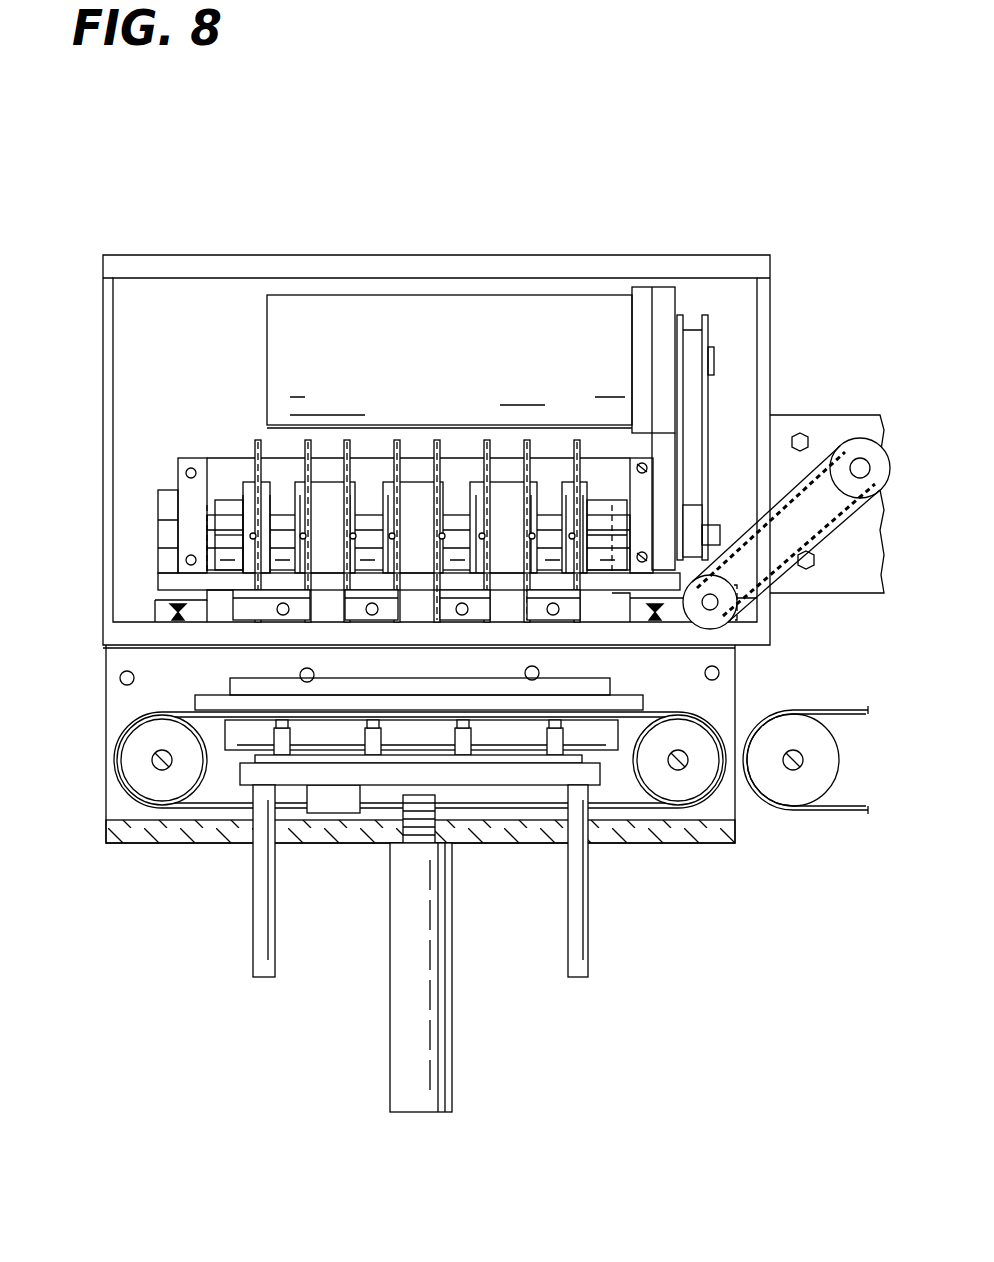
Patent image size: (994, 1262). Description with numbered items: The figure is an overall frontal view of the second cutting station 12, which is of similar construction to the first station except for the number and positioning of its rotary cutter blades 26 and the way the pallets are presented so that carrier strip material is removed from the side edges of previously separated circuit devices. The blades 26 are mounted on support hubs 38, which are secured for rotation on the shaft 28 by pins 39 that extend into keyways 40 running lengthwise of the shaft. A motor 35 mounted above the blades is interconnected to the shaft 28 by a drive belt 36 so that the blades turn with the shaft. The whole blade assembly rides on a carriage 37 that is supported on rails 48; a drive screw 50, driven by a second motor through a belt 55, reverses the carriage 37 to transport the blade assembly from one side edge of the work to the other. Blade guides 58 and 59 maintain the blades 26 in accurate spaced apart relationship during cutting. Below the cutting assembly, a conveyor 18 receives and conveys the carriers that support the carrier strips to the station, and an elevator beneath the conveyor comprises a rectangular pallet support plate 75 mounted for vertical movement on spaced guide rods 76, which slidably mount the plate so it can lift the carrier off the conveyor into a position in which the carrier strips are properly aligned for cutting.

The second cutting station 12 is at (97, 432).
The conveyor 18 is at (208, 812).
The rotary cutter blades 26 is at (400, 455).
The shaft 28 is at (268, 460).
The motor 35 is at (487, 312).
The drive belt 36 is at (695, 450).
The carriage 37 is at (330, 580).
The support hubs 38 is at (326, 478).
The pins 39 is at (562, 522).
The keyways 40 is at (625, 520).
The rails 48 is at (185, 628).
The drive screw 50 is at (735, 612).
The belt 55 is at (792, 575).
The blade guide 58 is at (540, 612).
The blade guide 59 is at (248, 615).
The pallet support plate 75 is at (447, 775).
The guide rods 76 is at (578, 897).